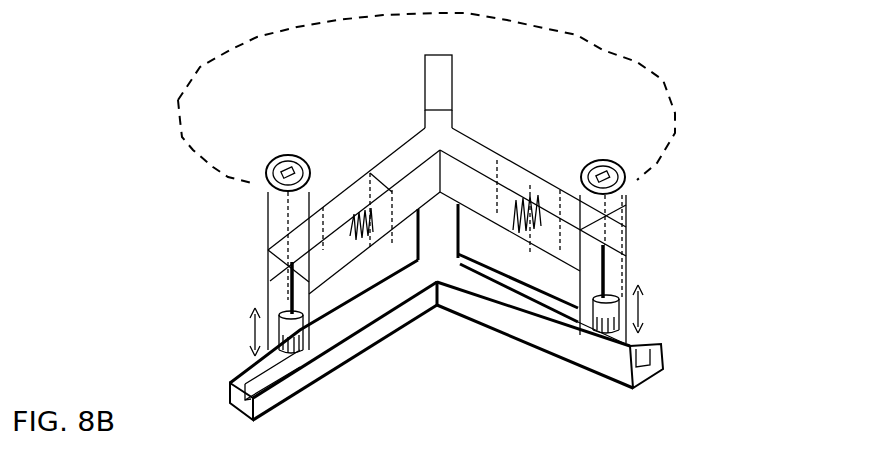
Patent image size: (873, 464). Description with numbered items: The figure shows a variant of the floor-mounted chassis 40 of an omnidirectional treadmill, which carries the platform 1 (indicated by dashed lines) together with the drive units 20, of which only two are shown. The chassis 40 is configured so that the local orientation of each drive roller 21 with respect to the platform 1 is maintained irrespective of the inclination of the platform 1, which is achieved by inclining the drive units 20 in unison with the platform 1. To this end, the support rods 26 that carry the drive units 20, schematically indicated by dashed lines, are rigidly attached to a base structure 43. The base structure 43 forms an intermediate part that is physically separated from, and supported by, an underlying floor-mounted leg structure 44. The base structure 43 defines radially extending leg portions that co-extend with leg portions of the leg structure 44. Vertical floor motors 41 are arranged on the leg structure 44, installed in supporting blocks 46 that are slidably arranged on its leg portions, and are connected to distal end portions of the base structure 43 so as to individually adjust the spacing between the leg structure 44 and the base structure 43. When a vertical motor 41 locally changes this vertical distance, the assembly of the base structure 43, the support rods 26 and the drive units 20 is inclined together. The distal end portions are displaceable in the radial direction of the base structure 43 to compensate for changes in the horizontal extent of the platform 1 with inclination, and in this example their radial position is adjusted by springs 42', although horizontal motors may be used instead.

The platform 1 is at (663, 86).
The drive unit 20 is at (251, 197).
The drive roller 21 is at (287, 173).
The support rod 26 is at (267, 220).
The chassis 40 is at (210, 336).
The vertical floor motor 41 is at (300, 330).
The spring 42' is at (449, 178).
The base structure 43 is at (460, 190).
The leg structure 44 is at (400, 313).
The supporting block 46 is at (298, 325).